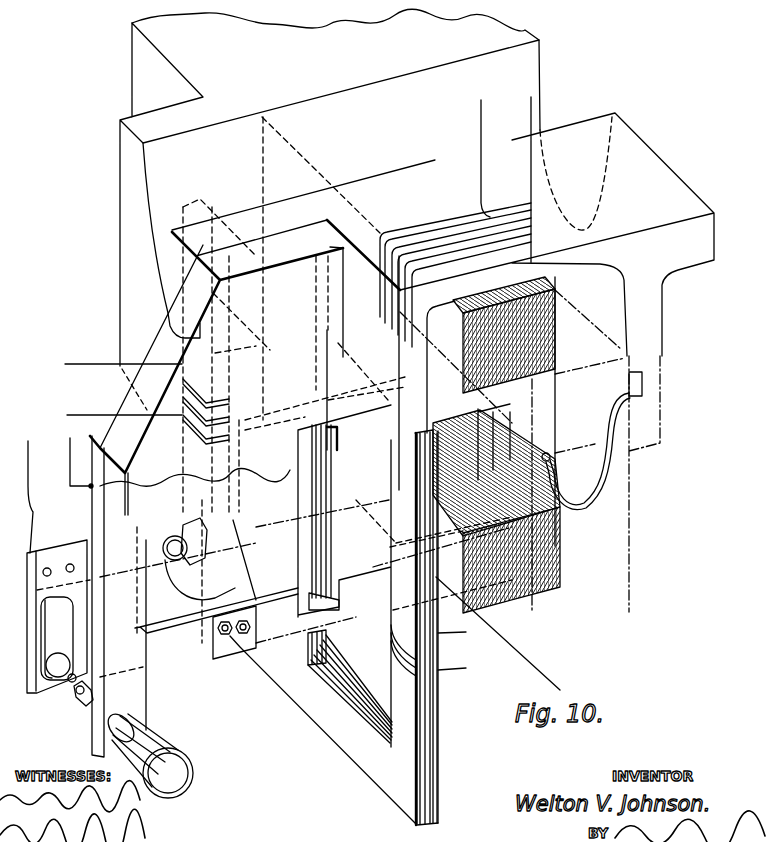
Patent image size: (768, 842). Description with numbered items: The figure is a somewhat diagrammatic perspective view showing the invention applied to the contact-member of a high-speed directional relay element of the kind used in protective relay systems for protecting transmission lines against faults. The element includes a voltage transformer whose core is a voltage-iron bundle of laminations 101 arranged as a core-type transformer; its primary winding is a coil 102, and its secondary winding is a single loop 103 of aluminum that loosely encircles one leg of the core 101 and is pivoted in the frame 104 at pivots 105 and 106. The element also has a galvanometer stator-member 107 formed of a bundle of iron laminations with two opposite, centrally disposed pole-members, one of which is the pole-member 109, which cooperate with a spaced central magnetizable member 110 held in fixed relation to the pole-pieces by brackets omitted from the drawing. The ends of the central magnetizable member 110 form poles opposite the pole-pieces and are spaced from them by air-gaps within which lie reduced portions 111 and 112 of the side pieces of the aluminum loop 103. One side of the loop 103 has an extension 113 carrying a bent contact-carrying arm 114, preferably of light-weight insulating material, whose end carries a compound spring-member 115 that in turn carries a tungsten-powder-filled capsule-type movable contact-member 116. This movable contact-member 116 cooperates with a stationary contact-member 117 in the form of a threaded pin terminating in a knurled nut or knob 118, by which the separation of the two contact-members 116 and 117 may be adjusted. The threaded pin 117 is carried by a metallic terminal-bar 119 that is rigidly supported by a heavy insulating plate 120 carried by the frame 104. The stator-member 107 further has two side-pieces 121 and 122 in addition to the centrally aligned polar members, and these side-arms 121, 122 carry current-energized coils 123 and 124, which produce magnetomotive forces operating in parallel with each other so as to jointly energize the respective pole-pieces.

The voltage-iron bundle of laminations 101 is at (562, 549).
The coil 102 is at (489, 220).
The single loop 103 is at (360, 612).
The frame 104 is at (543, 57).
The pivot 105 is at (290, 400).
The pivot 106 is at (556, 475).
The galvanometer stator-member 107 is at (438, 727).
The pole-member 109 is at (326, 652).
The central magnetizable member 110 is at (333, 534).
The reduced portion 111 is at (340, 458).
The reduced portion 112 is at (329, 617).
The extension 113 is at (248, 650).
The contact-carrying arm 114 is at (163, 658).
The compound spring-member 115 is at (57, 616).
The movable contact-member 116 is at (58, 682).
The stationary contact-member 117 is at (83, 700).
The knurled nut or knob 118 is at (168, 748).
The terminal-bar 119 is at (140, 702).
The insulating plate 120 is at (165, 354).
The side-piece 121 is at (226, 348).
The side-piece 122 is at (438, 693).
The current-energized coil 123 is at (229, 372).
The current-energized coil 124 is at (438, 655).